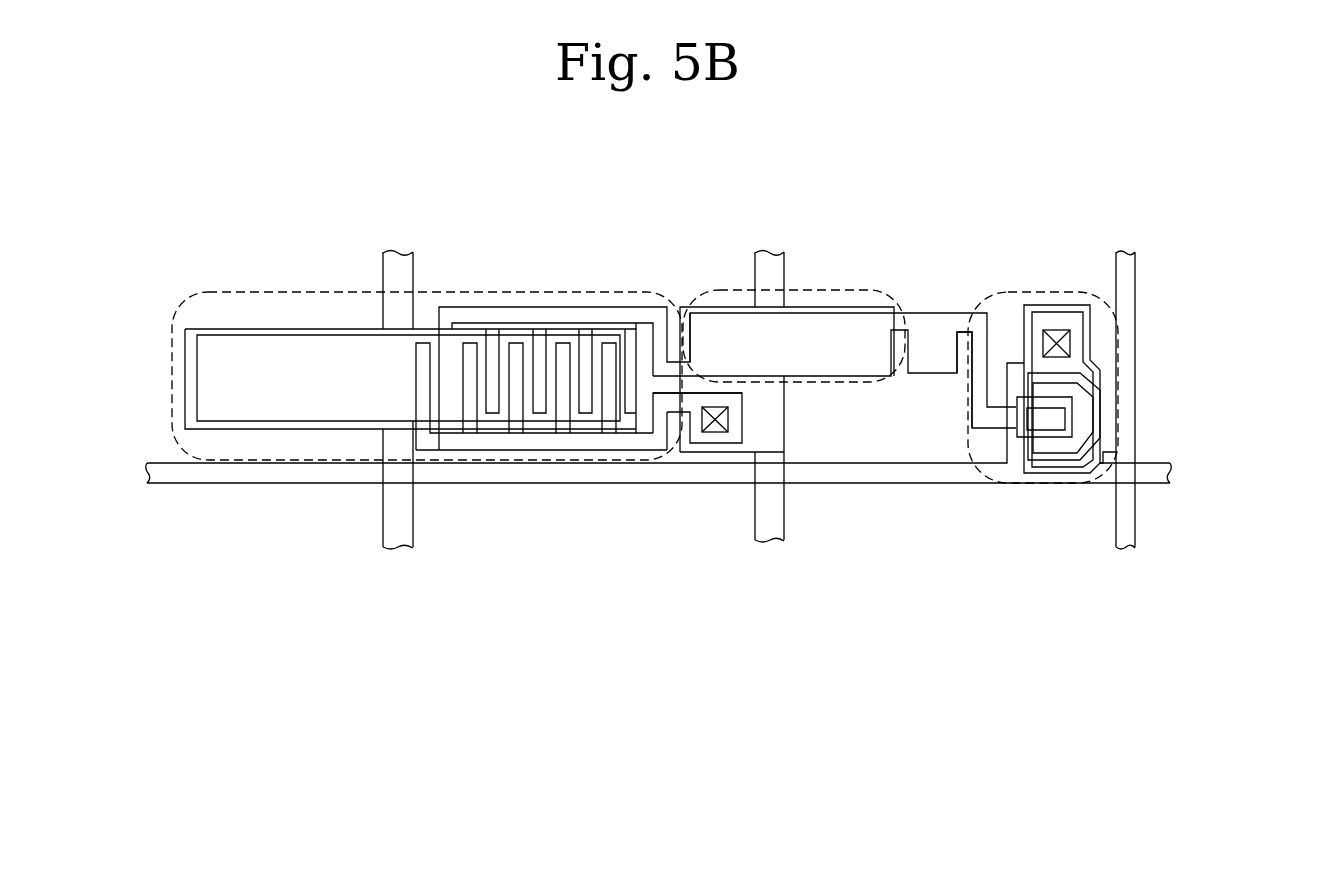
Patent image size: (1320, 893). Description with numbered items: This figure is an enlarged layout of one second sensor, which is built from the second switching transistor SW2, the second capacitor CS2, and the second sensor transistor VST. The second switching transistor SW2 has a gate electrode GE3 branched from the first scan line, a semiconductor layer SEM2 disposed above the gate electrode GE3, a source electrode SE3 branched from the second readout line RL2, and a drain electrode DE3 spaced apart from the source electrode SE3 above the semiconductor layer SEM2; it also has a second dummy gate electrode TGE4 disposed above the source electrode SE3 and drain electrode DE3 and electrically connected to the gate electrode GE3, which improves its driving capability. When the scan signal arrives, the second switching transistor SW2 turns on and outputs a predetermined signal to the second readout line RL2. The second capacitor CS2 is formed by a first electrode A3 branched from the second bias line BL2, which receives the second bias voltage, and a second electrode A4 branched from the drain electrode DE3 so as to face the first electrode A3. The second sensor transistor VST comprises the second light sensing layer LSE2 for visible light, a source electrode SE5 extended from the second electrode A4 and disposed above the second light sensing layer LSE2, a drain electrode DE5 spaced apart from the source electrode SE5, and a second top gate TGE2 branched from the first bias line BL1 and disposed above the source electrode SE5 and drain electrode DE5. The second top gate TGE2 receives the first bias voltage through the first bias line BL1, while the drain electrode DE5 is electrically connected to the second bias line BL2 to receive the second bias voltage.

The first bias line BL1 is at (397, 252).
The second top gate TGE2 is at (494, 330).
The second light sensing layer LSE2 is at (540, 342).
The second sensor transistor VST is at (604, 292).
The source electrode SE5 is at (661, 367).
The second bias line BL2 is at (766, 252).
The second capacitor CS2 is at (838, 292).
The first electrode A3 is at (882, 305).
The second electrode A4 is at (829, 378).
The second switching transistor SW2 is at (1035, 292).
The second readout line RL2 is at (1125, 252).
The second dummy gate electrode TGE4 is at (1092, 318).
The gate electrode GE3 is at (1076, 343).
The semiconductor layer SEM2 is at (1070, 379).
The source electrode SE3 is at (1077, 397).
The drain electrode DE5 is at (512, 414).
The drain electrode DE3 is at (995, 422).